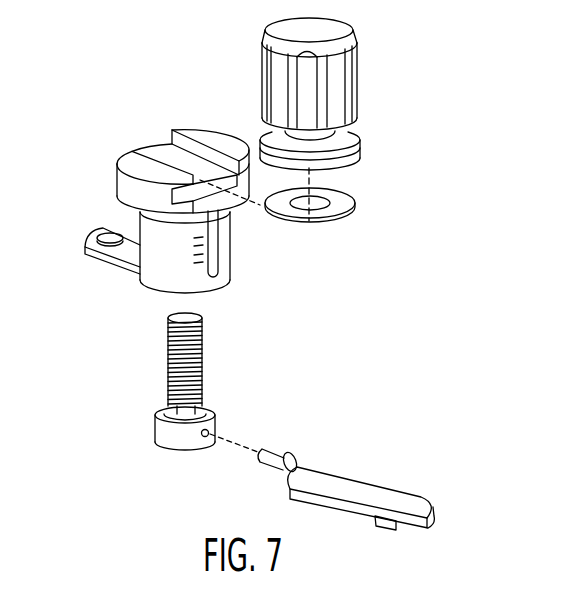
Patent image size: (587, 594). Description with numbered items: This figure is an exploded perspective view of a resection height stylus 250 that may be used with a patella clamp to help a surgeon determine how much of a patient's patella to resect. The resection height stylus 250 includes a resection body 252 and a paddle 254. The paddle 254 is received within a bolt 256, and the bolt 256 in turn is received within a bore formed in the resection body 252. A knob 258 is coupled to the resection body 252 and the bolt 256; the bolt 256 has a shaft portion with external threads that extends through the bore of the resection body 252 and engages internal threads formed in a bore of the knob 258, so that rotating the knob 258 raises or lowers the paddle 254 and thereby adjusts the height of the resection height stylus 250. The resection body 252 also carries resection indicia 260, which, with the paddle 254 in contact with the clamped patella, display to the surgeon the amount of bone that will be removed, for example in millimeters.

The resection height stylus 250 is at (516, 101).
The resection body 252 is at (148, 257).
The paddle 254 is at (358, 477).
The bolt 256 is at (163, 436).
The knob 258 is at (353, 56).
The resection indicia 260 is at (248, 251).